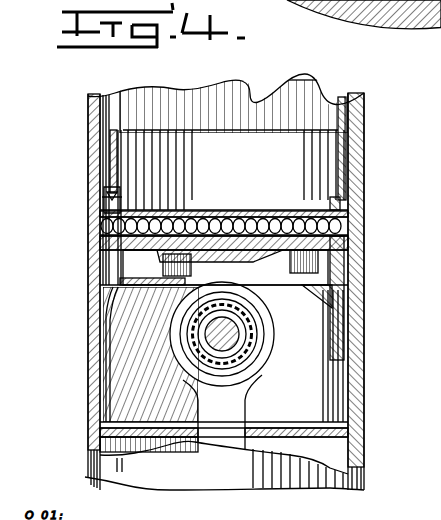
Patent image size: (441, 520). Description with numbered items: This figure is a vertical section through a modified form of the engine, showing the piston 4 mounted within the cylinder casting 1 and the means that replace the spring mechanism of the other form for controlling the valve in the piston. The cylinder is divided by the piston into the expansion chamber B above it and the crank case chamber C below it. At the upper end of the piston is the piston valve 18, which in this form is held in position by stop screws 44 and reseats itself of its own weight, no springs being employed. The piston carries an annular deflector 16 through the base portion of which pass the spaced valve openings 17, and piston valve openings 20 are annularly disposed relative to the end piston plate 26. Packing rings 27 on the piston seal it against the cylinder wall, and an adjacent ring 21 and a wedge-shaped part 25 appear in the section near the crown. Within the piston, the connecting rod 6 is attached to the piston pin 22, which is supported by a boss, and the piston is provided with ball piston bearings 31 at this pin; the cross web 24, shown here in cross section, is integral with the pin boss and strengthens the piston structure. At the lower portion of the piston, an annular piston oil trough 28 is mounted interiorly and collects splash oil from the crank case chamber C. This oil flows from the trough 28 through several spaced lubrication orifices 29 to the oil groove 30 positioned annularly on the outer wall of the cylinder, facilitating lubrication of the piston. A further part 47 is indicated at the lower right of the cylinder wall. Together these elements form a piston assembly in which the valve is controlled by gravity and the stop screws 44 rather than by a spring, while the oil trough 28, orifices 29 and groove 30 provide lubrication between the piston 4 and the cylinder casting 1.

The expansion chamber B is at (268, 100).
The annular deflector 16 is at (365, 152).
The stop screws 44 is at (88, 187).
The valve openings 17 is at (88, 213).
The piston valve 18 is at (235, 205).
The packing ring 21 is at (88, 244).
The piston valve openings 20 is at (88, 255).
The end piston plate 26 is at (88, 268).
The packing rings 27 is at (88, 285).
The cross-webs 24 is at (88, 300).
The wedge block 25 is at (100, 312).
The piston 4 is at (364, 295).
The ball piston bearings 31 is at (252, 350).
The piston pin 22 is at (215, 334).
The connecting rod 6 is at (230, 411).
The annular piston oil trough 28 is at (88, 413).
The lubrication orifices 29 is at (85, 433).
The oil groove 30 is at (364, 430).
The cylinder casting 1 is at (440, 335).
The crank case chamber C is at (364, 453).
The base 47 is at (438, 469).